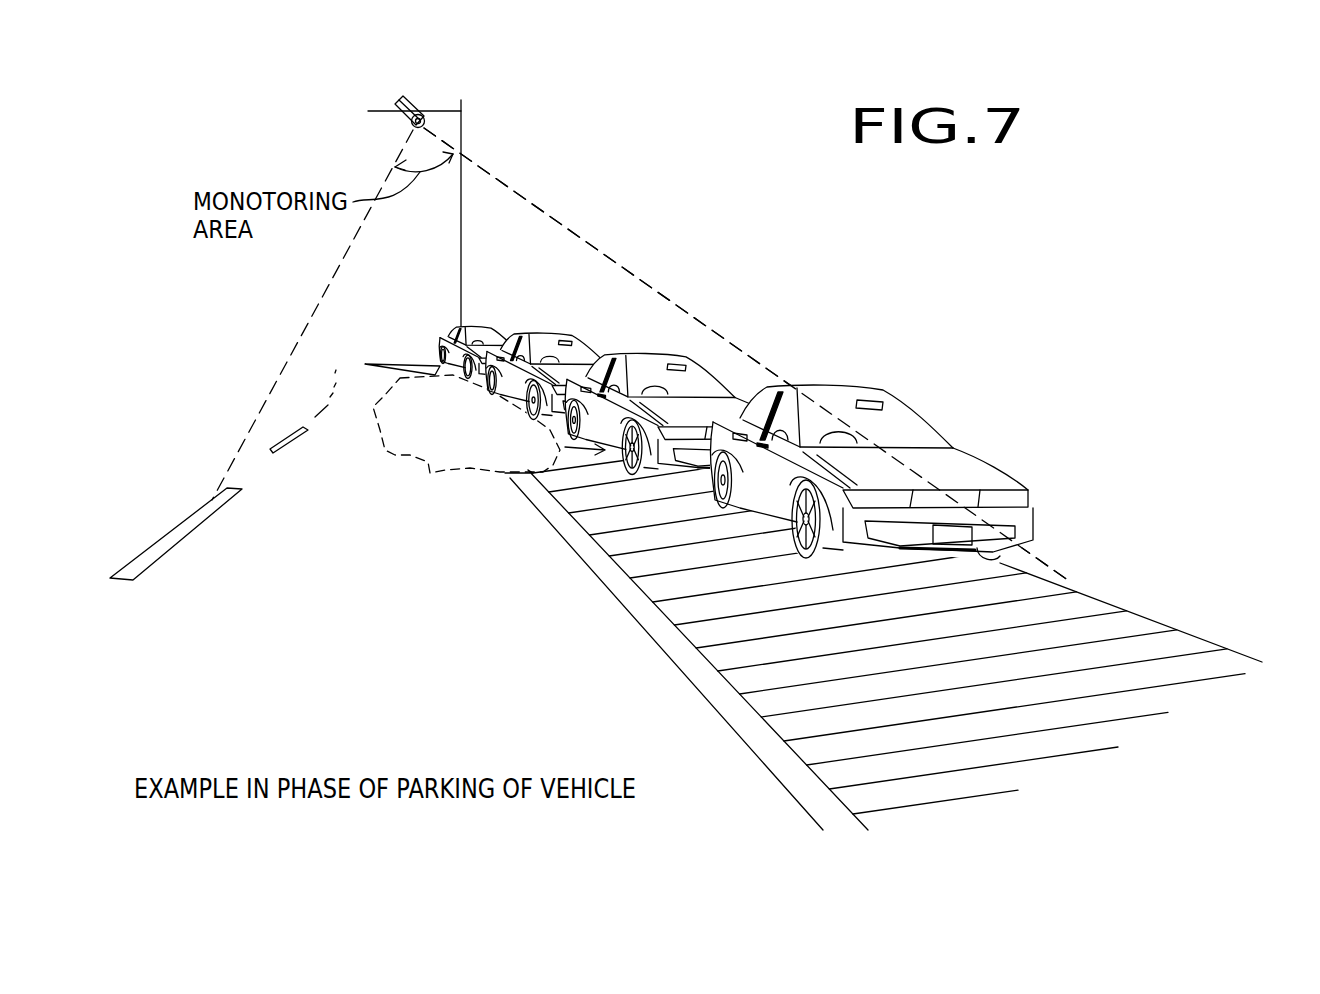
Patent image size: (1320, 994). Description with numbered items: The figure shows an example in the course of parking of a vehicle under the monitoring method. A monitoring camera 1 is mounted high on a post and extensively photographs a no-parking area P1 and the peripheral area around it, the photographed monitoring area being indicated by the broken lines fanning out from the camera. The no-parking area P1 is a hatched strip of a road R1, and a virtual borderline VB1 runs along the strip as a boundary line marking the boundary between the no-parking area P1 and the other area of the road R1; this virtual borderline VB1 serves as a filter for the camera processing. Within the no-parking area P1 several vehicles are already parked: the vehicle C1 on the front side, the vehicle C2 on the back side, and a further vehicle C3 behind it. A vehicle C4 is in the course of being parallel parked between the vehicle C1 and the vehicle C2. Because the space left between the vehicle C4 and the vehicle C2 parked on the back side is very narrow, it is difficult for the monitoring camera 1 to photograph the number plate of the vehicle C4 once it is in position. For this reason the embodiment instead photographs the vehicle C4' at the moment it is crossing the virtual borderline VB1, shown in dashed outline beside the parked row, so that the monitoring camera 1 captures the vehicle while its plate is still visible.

The monitoring camera 1 is at (450, 80).
The vehicle C1 is at (990, 468).
The vehicle C2 is at (572, 353).
The vehicle C3 is at (488, 324).
The vehicle C4 is at (678, 382).
The vehicle crossing the virtual borderline C4' is at (466, 462).
The no-parking area P1 is at (1100, 603).
The road R1 is at (223, 530).
The virtual borderline VB1 is at (690, 663).